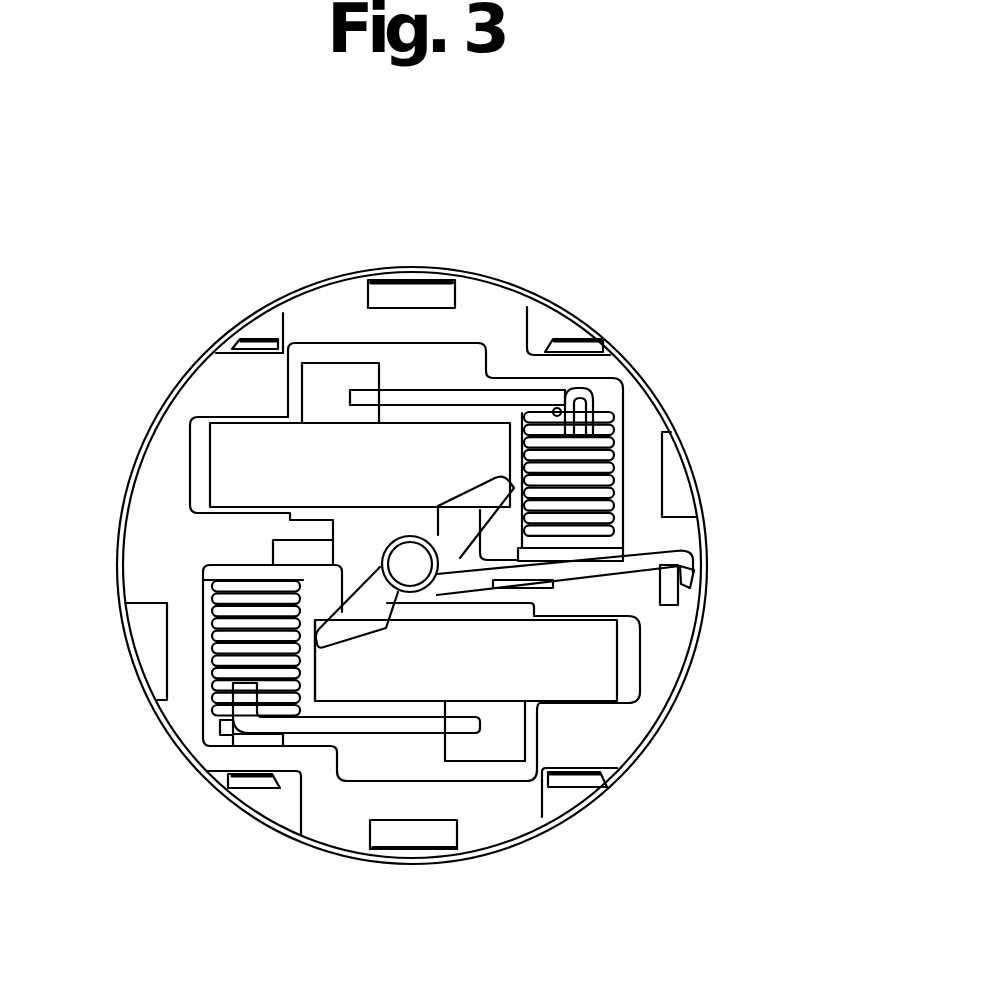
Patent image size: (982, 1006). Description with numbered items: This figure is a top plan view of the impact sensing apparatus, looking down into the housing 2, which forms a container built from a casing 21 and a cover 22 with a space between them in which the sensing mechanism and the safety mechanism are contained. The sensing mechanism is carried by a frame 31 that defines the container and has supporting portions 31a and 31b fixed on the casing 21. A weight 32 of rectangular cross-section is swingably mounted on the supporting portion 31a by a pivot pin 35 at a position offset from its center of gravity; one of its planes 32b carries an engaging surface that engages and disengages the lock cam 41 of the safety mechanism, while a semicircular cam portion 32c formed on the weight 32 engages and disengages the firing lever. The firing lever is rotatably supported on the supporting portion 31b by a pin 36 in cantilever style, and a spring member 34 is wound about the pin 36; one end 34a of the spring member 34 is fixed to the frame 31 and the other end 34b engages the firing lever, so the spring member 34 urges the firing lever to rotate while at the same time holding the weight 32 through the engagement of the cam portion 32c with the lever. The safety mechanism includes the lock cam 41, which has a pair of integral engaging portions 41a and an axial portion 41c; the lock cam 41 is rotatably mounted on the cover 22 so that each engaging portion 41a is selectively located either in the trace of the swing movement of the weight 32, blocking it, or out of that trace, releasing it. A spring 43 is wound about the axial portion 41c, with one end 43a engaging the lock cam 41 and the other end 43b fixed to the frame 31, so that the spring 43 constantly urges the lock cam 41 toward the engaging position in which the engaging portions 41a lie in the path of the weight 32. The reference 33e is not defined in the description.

The housing 2 is at (407, 867).
The casing 21 is at (193, 760).
The cover 22 is at (368, 772).
The frame 31 is at (673, 688).
The supporting portion 31a is at (233, 383).
The supporting portion 31b is at (580, 368).
The weight 32 is at (402, 418).
The plane 32b is at (250, 450).
The cam portion 32c is at (322, 373).
The core portion 33e is at (438, 477).
The spring member 34 is at (457, 388).
The end of spring member 34a is at (361, 397).
The end of spring member 34b is at (590, 395).
The pivot pin 35 is at (257, 340).
The pin 36 is at (556, 340).
The lock cam 41 is at (333, 607).
The engaging portion 41a is at (595, 506).
The axial portion 41c is at (415, 572).
The spring 43 is at (380, 543).
The end of spring 43a is at (458, 545).
The end of spring 43b is at (697, 570).